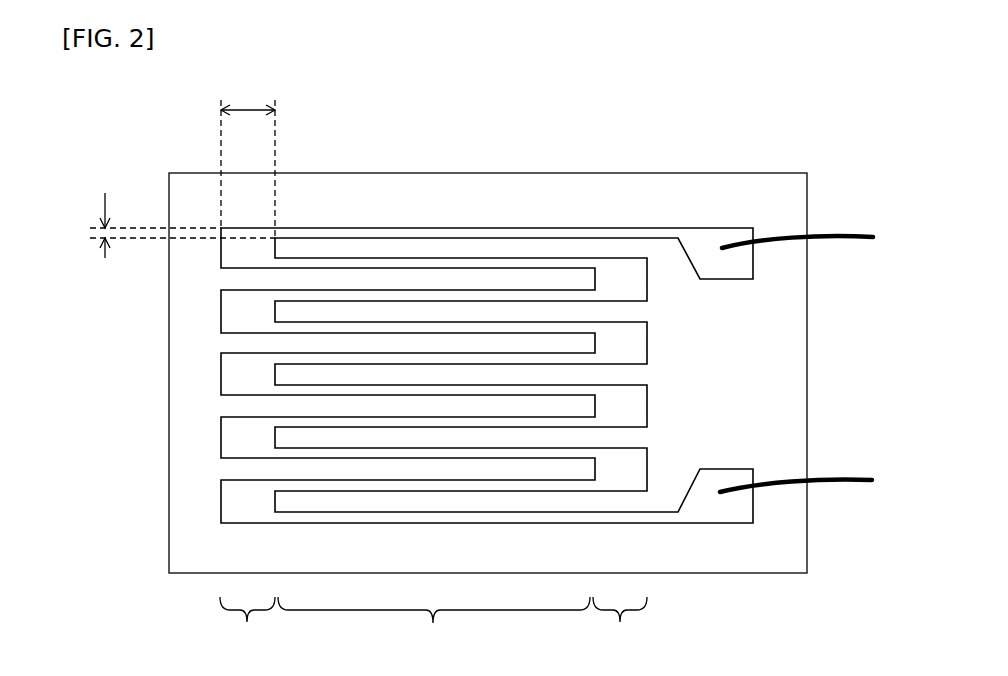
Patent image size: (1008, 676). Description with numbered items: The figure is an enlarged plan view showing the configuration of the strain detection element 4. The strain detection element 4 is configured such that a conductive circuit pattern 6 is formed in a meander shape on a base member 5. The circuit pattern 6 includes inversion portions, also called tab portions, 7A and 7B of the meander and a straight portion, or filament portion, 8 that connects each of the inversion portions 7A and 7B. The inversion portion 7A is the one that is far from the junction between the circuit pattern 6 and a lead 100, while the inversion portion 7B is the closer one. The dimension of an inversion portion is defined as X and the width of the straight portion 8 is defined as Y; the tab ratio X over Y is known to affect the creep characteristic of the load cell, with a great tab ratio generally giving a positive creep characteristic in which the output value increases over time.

The strain detection element 4 is at (90, 113).
The base member 5 is at (415, 185).
The conductive circuit pattern 6 is at (580, 227).
The inversion portion 7A is at (247, 624).
The inversion portion 7B is at (620, 624).
The straight portion 8 is at (434, 626).
The lead 100 is at (847, 233).